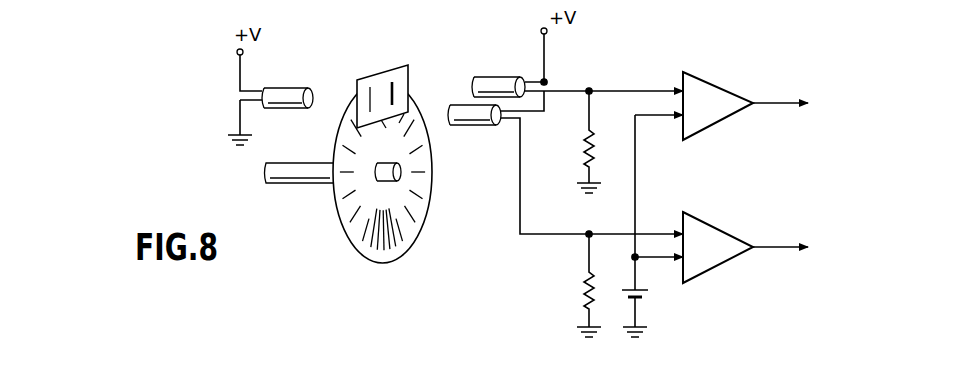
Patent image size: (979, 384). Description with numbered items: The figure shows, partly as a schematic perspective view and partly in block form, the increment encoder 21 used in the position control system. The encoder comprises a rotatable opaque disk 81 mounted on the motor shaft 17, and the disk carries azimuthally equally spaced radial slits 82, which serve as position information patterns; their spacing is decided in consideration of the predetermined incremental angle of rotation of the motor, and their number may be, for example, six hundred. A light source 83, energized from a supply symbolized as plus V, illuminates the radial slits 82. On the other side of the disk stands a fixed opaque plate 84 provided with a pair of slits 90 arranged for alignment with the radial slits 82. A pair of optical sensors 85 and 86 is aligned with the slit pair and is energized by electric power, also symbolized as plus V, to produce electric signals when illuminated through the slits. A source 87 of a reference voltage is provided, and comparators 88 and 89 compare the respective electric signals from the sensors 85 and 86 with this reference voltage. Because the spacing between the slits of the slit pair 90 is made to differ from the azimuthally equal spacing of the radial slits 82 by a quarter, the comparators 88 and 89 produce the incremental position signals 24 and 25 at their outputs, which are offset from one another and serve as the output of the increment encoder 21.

The motor shaft 17 is at (286, 184).
The increment encoder 21 is at (730, 62).
The incremental position signal 24 is at (776, 106).
The incremental position signal 25 is at (790, 249).
The rotatable opaque disk 81 is at (343, 224).
The radial slits 82 is at (367, 236).
The light source 83 is at (288, 87).
The fixed opaque plate 84 is at (396, 62).
The optical sensor 85 is at (500, 77).
The optical sensor 86 is at (473, 128).
The source of reference voltage 87 is at (645, 288).
The comparator 88 is at (704, 128).
The comparator 89 is at (723, 268).
The pair of slits 90 is at (372, 84).